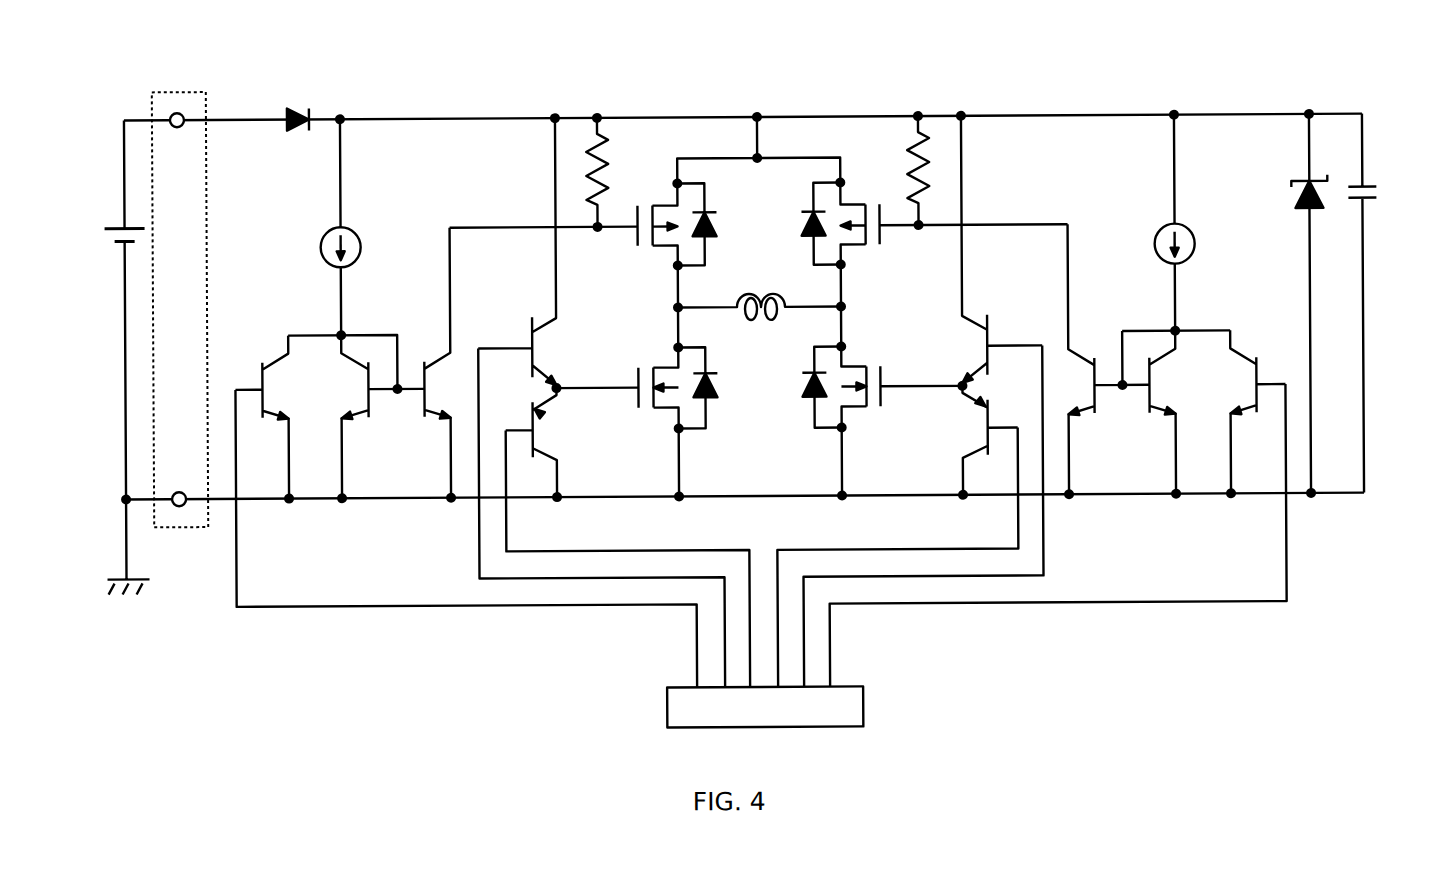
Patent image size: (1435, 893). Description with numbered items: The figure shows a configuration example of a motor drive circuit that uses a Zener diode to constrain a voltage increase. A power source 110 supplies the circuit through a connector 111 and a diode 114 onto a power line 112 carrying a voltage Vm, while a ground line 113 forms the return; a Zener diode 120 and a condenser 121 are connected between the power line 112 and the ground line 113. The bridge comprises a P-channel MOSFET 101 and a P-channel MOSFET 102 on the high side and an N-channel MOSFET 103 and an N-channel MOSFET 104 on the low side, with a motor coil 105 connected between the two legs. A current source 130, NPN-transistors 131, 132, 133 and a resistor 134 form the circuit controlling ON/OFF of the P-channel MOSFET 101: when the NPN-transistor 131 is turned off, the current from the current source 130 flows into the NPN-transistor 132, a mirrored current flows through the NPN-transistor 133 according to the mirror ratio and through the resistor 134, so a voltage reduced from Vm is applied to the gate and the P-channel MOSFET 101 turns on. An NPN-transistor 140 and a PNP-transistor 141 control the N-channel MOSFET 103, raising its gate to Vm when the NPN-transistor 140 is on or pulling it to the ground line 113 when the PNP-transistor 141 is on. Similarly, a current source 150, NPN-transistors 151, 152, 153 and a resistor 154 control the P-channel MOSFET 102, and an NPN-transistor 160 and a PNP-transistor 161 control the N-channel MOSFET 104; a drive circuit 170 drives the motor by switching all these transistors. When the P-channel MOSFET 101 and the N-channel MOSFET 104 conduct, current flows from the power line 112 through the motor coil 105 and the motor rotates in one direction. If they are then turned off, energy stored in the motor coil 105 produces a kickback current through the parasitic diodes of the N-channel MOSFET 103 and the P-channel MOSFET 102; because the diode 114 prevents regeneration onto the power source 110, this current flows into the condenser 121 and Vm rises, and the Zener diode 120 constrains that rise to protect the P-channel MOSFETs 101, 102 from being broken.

The P-channel MOSFET 101 is at (668, 251).
The P-channel MOSFET 102 is at (850, 250).
The N-channel MOSFET 103 is at (668, 416).
The N-channel MOSFET 104 is at (850, 416).
The motor coil 105 is at (753, 322).
The power source 110 is at (120, 240).
The connector 111 is at (179, 89).
The power line 112 is at (515, 115).
The ground line 113 is at (397, 500).
The diode 114 is at (292, 104).
The Zener diode 120 is at (1300, 210).
The condenser 121 is at (1368, 206).
The current source 130 is at (354, 228).
The NPN-transistor 131 is at (276, 362).
The NPN-transistor 132 is at (361, 405).
The NPN-transistor 133 is at (438, 360).
The resistor 134 is at (609, 166).
The NPN-transistor 140 is at (550, 371).
The PNP-transistor 141 is at (550, 452).
The current source 150 is at (1165, 230).
The NPN-transistor 151 is at (1253, 365).
The NPN-transistor 152 is at (1163, 410).
The NPN-transistor 153 is at (1082, 364).
The resistor 154 is at (909, 162).
The NPN-transistor 160 is at (969, 373).
The PNP-transistor 161 is at (969, 455).
The drive circuit 170 is at (861, 700).